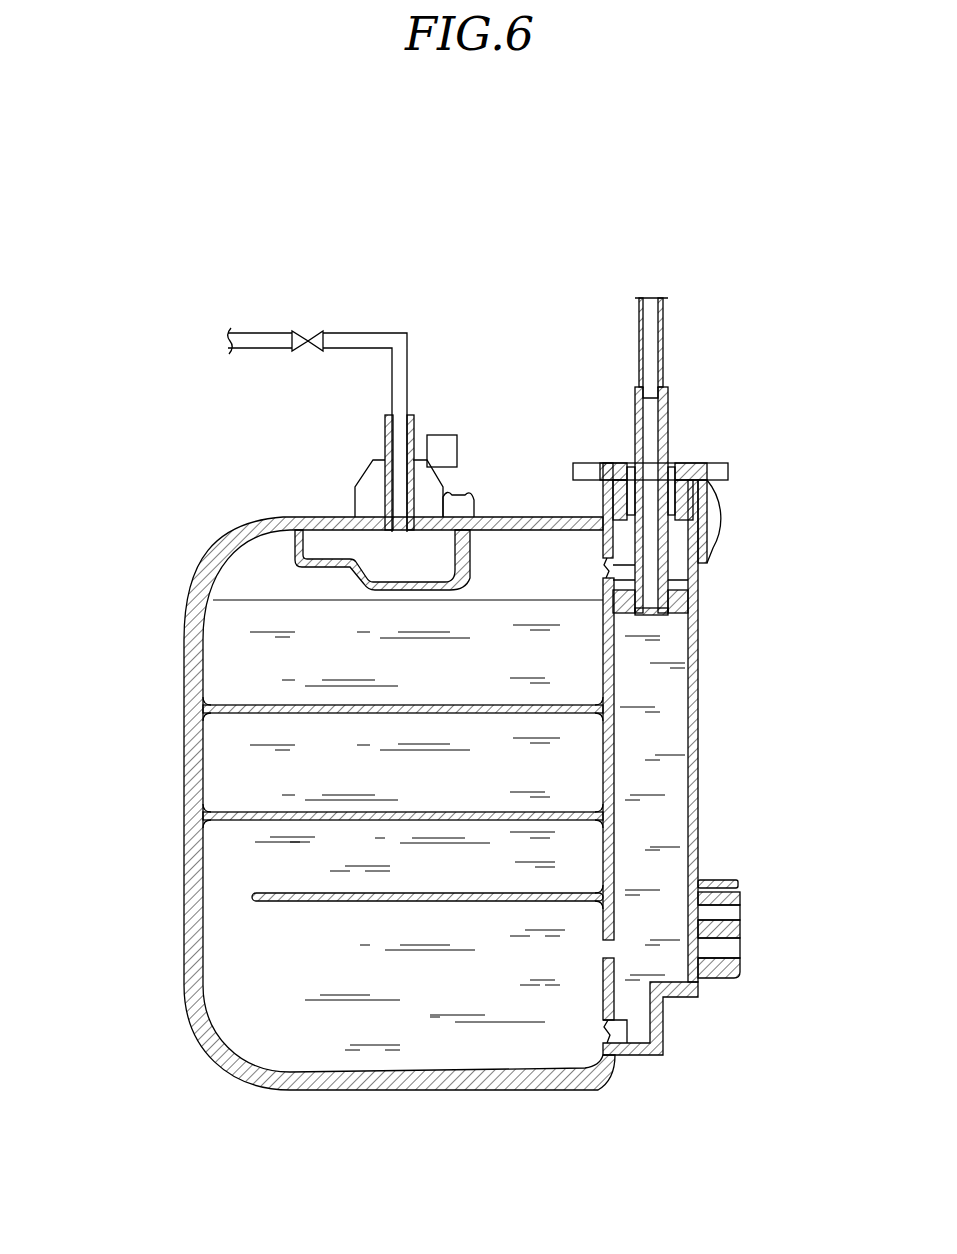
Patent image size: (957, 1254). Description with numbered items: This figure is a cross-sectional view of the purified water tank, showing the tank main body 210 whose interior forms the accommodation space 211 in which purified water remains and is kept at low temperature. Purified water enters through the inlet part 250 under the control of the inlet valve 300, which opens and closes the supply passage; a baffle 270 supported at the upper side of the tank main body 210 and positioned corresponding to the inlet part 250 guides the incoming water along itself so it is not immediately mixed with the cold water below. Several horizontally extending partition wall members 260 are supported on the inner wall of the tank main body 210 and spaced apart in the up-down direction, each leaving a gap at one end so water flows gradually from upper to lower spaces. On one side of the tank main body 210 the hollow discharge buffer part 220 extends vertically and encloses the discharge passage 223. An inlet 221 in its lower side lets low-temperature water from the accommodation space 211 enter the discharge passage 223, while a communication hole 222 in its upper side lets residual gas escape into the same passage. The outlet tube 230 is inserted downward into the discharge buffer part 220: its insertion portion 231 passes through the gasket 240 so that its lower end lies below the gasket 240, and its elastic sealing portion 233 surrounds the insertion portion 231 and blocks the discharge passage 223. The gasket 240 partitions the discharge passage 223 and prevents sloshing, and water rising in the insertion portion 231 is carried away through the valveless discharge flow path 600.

The tank main body 210 is at (162, 999).
The accommodation space 211 is at (357, 667).
The discharge buffer part 220 is at (698, 810).
The inlet 221 is at (610, 1033).
The communication hole 222 is at (613, 568).
The discharge passage 223 is at (640, 722).
The outlet tube 230 is at (795, 420).
The insertion portion 231 is at (670, 537).
The sealing portion 233 is at (707, 470).
The gasket 240 is at (672, 604).
The inlet part 250 is at (413, 420).
The partition wall member 260 is at (300, 893).
The baffle 270 is at (350, 540).
The inlet valve 300 is at (299, 332).
The discharge flow path 600 is at (663, 350).